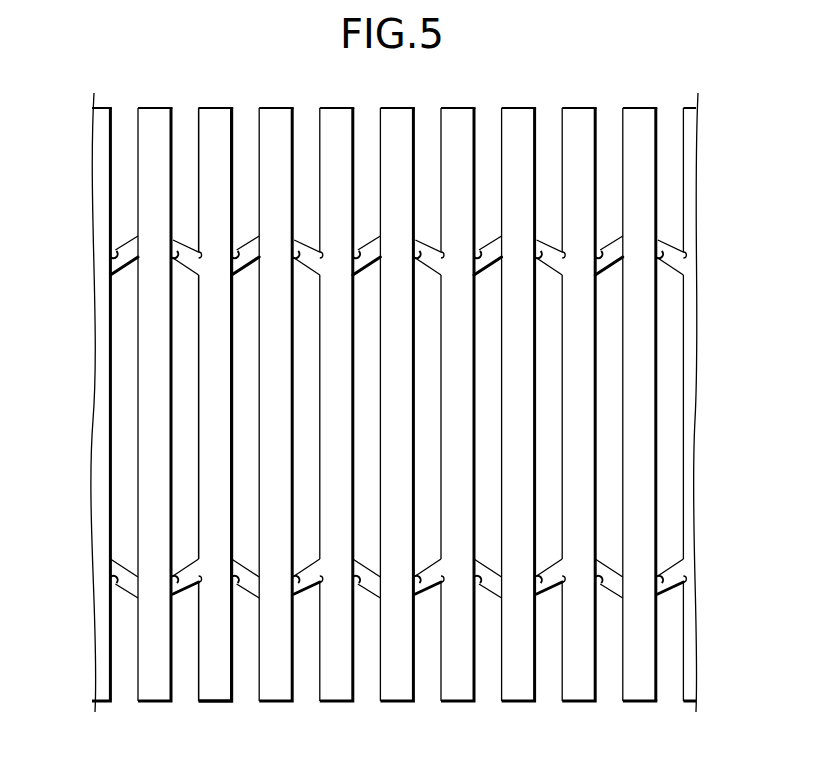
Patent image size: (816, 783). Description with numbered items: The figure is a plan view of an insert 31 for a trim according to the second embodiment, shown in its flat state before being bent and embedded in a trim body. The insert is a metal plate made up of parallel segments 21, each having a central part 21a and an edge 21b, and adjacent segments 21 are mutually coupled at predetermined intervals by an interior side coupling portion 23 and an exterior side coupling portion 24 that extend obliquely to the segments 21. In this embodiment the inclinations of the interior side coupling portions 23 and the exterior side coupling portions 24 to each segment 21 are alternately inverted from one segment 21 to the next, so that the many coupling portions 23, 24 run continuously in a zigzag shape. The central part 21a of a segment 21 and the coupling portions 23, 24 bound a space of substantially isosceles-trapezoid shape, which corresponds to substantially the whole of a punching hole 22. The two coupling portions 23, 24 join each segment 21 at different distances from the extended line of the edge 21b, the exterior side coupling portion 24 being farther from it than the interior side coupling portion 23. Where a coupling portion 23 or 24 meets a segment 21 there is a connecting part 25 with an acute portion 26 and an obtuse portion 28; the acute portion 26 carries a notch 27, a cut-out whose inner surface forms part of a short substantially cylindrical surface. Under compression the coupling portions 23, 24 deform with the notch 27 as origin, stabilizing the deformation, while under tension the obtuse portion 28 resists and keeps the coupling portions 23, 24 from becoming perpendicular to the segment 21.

The segment 21 is at (212, 107).
The central part of the segment 21a is at (582, 450).
The edge of the segment 21b is at (633, 107).
The punching hole 22 is at (157, 703).
The interior side coupling portion 23 is at (107, 583).
The exterior side coupling portion 24 is at (110, 278).
The connecting part 25 is at (176, 252).
The acute portion 26 is at (106, 256).
The notch 27 is at (176, 262).
The obtuse portion 28 is at (135, 240).
The insert 31 is at (472, 99).